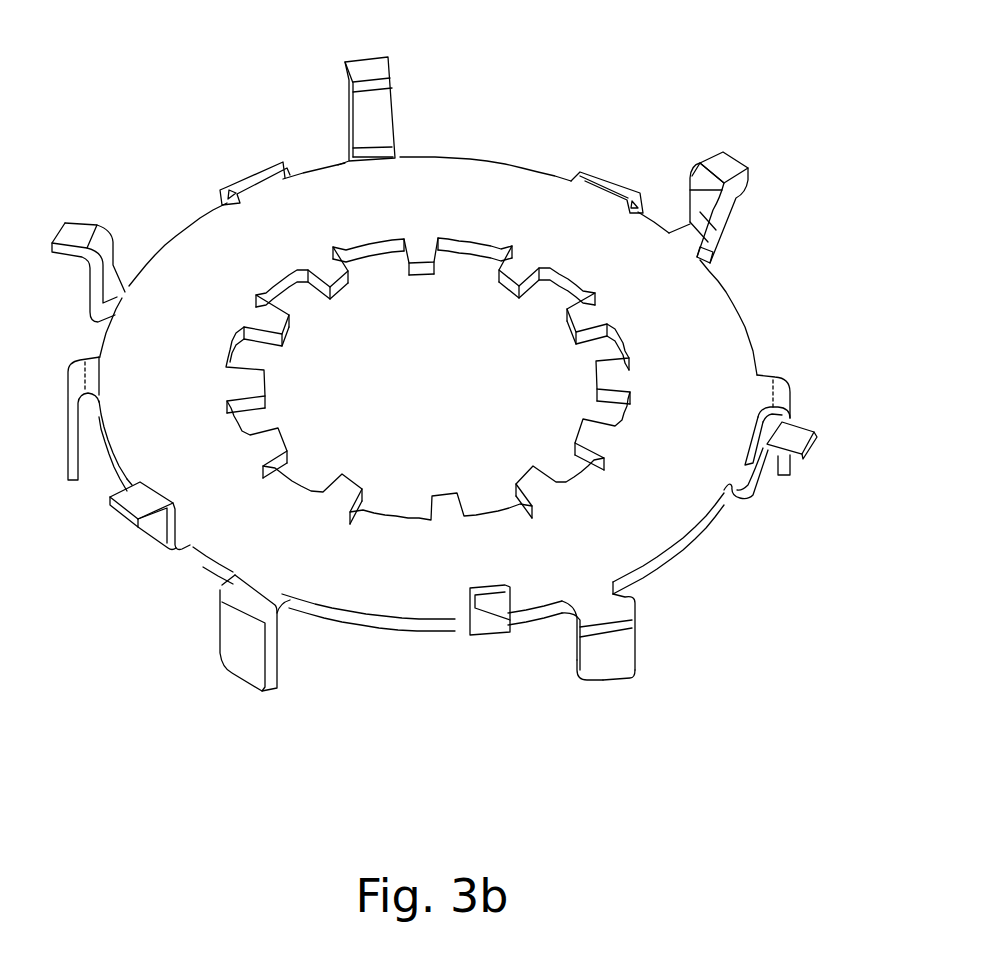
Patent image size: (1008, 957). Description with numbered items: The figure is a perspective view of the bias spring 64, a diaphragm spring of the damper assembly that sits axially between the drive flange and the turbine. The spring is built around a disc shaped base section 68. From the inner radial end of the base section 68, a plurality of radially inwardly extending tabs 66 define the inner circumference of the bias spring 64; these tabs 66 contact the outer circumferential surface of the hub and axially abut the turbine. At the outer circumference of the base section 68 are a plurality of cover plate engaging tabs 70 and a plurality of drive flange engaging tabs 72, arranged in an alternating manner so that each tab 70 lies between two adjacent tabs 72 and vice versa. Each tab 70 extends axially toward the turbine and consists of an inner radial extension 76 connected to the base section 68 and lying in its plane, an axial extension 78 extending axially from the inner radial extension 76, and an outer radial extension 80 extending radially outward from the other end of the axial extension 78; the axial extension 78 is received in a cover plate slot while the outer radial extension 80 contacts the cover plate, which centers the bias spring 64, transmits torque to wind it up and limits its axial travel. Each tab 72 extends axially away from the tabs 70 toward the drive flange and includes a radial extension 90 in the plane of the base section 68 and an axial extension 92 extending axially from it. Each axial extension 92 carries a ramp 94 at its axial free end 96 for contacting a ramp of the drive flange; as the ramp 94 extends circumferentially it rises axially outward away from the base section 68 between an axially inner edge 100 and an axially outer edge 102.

The bias spring 64 is at (800, 117).
The radially inwardly extending tabs 66 is at (267, 318).
The disc shaped base section 68 is at (380, 553).
The cover plate engaging tabs 70 is at (407, 123).
The drive flange engaging tabs 72 is at (550, 653).
The inner radial extension 76 is at (703, 237).
The axial extension 78 is at (703, 207).
The outer radial extension 80 is at (727, 165).
The radial extension 90 is at (613, 588).
The axial extension 92 is at (612, 647).
The ramp 94 is at (600, 687).
The axial free end 96 is at (623, 693).
The axially inner edge 100 is at (567, 673).
The axially outer edge 102 is at (635, 678).